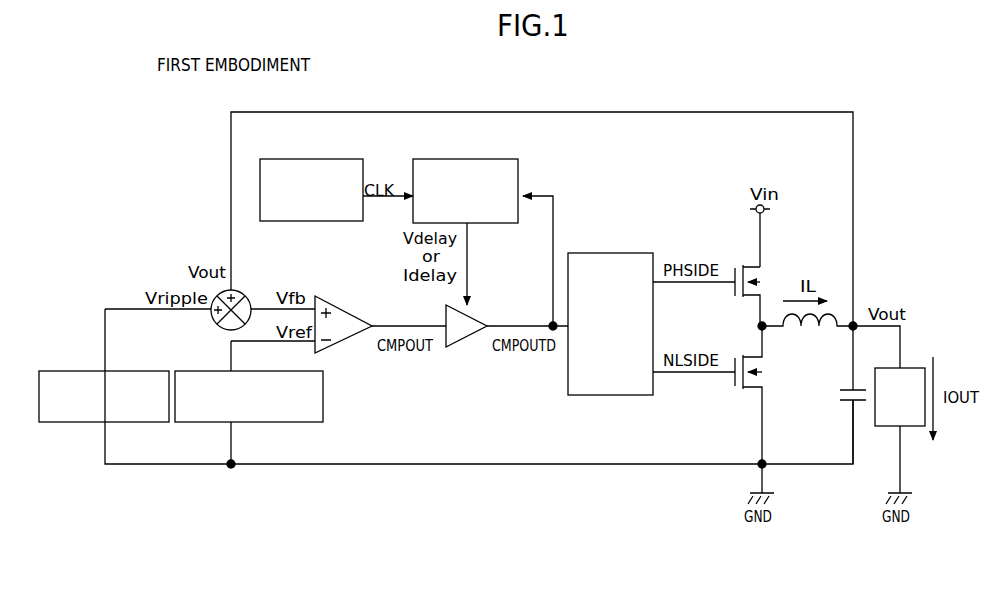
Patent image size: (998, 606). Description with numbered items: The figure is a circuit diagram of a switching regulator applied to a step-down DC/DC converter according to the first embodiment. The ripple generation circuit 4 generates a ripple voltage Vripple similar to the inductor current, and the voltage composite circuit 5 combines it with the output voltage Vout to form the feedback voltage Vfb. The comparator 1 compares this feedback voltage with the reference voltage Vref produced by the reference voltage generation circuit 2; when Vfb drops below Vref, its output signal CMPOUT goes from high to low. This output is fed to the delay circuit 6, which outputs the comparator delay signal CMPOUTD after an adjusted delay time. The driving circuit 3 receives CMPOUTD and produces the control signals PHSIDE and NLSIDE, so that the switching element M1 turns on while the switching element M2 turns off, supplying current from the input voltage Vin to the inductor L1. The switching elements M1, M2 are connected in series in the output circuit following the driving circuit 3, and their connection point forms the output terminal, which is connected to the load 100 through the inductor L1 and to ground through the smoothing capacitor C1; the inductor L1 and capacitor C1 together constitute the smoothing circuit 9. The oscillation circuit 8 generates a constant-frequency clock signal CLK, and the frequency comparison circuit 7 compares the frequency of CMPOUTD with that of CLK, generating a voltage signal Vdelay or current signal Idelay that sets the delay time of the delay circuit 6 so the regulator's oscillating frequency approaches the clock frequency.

The comparator 1 is at (340, 350).
The reference voltage generation circuit 2 is at (196, 371).
The driving circuit 3 is at (608, 253).
The ripple generation circuit 4 is at (63, 371).
The voltage composite circuit 5 is at (244, 293).
The delay circuit 6 is at (455, 345).
The frequency comparison circuit 7 is at (472, 158).
The oscillation circuit 8 is at (322, 158).
The smoothing circuit 9 is at (816, 389).
The load 100 is at (910, 368).
The switching element M1 is at (765, 275).
The switching element M2 is at (765, 372).
The inductor L1 is at (820, 334).
The capacitor C1 is at (823, 366).